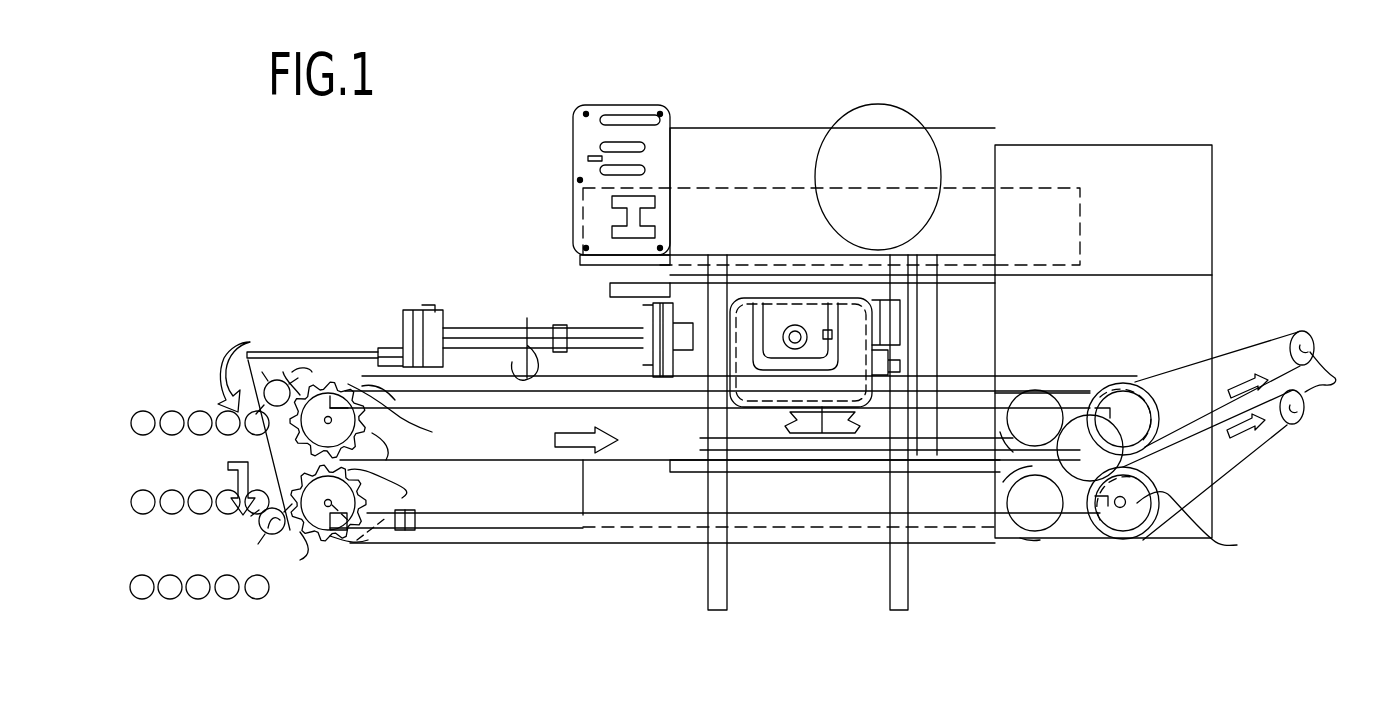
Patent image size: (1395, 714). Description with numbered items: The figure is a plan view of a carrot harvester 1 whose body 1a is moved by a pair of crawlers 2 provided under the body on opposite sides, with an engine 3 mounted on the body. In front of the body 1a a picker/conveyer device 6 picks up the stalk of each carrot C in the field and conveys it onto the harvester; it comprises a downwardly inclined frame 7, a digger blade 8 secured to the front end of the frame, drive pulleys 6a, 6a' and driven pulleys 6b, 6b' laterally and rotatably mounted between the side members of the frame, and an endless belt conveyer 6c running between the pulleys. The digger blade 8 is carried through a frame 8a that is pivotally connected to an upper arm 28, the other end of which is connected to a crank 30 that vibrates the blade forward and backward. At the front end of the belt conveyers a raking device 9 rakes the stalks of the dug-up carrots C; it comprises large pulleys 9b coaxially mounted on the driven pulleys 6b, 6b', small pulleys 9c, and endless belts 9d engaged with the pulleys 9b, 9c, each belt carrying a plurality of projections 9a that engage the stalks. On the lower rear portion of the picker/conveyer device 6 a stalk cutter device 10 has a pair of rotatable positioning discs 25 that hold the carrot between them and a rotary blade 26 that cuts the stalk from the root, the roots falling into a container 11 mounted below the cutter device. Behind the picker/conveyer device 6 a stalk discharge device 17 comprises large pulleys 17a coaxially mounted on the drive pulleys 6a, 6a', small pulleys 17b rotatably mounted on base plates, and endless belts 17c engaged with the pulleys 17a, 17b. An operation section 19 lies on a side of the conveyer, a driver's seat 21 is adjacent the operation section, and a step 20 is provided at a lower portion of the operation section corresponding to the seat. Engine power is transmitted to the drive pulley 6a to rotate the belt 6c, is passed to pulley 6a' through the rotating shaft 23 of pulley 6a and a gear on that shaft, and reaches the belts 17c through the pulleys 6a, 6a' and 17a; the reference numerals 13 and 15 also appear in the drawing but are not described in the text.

The harvester 1 is at (1060, 95).
The body 1a is at (945, 322).
The crawlers 2 is at (970, 185).
The engine 3 is at (900, 323).
The picker/conveyer device 6 is at (572, 552).
The drive pulley 6a is at (1129, 564).
The drive pulley 6a' is at (1124, 351).
The driven pulley 6b is at (340, 561).
The driven pulley 6b' is at (344, 362).
The endless belt conveyer 6c is at (430, 578).
The frame 7 is at (490, 398).
The digger blade 8 is at (235, 412).
The frame 8a is at (300, 352).
The raking device 9 is at (323, 302).
The projections 9a is at (370, 433).
The large pulleys 9b is at (385, 405).
The small pulleys 9c is at (248, 365).
The endless belts 9d is at (225, 465).
The stalk cutter device 10 is at (1013, 394).
The container 11 is at (1205, 295).
The rear support leg 13 is at (893, 590).
The front support leg 15 is at (725, 597).
The stalk discharge device 17 is at (1138, 392).
The large pulleys 17a is at (1210, 525).
The small pulleys 17b is at (1335, 377).
The endless belts 17c is at (1280, 345).
The operation section 19 is at (618, 105).
The step 20 is at (768, 150).
The driver's seat 21 is at (887, 105).
The rotating shaft 23 is at (1119, 508).
The positioning discs 25 is at (1040, 396).
The rotary blade 26 is at (1090, 478).
The upper arm 28 is at (483, 323).
The crank 30 is at (643, 320).
The carrot C is at (142, 413).